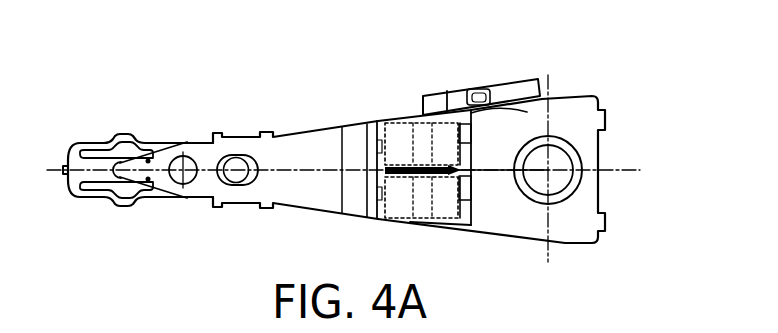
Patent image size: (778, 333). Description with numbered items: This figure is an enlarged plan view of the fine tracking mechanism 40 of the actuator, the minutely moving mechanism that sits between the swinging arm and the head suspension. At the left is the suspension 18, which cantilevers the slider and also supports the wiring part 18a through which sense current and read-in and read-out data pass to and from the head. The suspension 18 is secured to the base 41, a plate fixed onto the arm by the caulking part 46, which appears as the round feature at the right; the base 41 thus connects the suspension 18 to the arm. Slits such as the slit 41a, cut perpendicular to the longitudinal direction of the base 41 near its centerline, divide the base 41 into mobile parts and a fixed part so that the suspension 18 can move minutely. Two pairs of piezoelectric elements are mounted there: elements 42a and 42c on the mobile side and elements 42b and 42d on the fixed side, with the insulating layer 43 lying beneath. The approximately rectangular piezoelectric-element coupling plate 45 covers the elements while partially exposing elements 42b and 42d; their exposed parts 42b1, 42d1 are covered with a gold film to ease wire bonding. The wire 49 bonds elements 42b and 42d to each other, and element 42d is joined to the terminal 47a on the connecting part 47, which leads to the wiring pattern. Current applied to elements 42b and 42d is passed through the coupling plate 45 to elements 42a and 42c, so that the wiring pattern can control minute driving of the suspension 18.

The suspension 18 is at (304, 213).
The wiring part 18a is at (69, 152).
The fine tracking mechanism 40 is at (312, 112).
The base 41 is at (598, 160).
The slit 41a is at (380, 118).
The piezoelectric element 42a is at (394, 218).
The piezoelectric element 42b is at (440, 222).
The bottom wall 42b1 is at (470, 222).
The piezoelectric element 42c is at (403, 130).
The piezoelectric element 42d is at (447, 108).
The partition wall 42d1 is at (471, 154).
The insulating layer 43 is at (367, 126).
The piezoelectric-element coupling plate 45 is at (437, 92).
The caulking part 46 is at (567, 140).
The connecting part 47 is at (477, 131).
The terminal 47a is at (484, 89).
The wire 49 is at (514, 152).